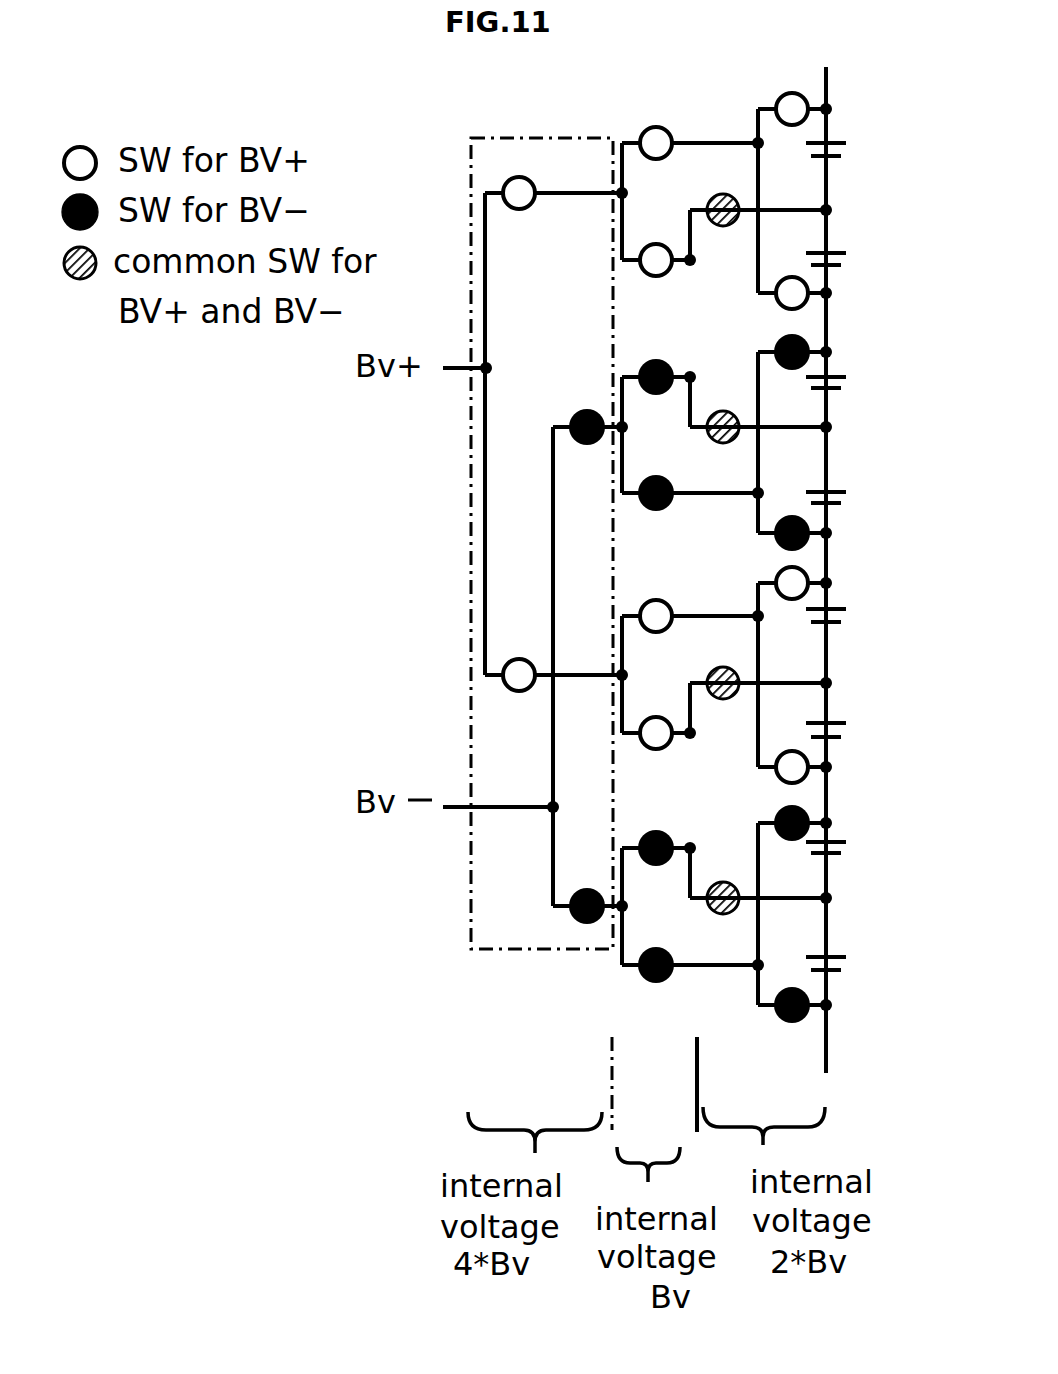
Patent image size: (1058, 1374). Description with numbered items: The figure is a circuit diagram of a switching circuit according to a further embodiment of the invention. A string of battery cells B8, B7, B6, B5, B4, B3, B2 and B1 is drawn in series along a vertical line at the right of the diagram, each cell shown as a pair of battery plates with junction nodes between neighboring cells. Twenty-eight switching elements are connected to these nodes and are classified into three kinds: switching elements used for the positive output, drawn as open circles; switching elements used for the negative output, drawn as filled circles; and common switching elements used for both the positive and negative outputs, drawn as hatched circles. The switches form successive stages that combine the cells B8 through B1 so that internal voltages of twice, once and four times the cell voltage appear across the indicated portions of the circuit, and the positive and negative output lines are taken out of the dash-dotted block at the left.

The battery cell B8 is at (850, 150).
The battery cell B7 is at (850, 257).
The battery cell B6 is at (850, 384).
The battery cell B5 is at (850, 493).
The battery cell B4 is at (850, 617).
The battery cell B3 is at (850, 726).
The battery cell B2 is at (850, 847).
The battery cell B1 is at (850, 957).